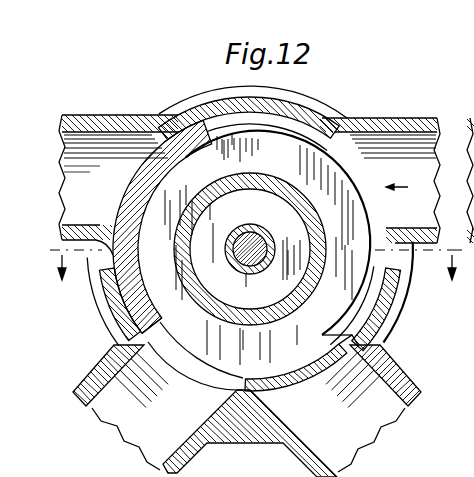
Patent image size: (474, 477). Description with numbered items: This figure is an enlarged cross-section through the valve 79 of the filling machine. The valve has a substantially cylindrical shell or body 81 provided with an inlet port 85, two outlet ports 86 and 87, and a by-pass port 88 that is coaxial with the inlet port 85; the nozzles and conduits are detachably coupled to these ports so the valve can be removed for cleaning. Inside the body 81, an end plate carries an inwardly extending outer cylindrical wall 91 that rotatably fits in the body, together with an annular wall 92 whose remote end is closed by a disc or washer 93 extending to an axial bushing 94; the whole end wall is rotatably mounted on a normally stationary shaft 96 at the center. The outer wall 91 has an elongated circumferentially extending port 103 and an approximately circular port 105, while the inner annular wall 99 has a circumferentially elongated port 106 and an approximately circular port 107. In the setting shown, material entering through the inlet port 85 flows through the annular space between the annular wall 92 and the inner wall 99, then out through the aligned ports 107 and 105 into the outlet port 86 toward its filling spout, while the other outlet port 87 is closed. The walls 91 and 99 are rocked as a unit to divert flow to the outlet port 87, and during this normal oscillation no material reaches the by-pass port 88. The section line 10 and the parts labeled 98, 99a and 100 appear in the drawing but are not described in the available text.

The section line 10 is at (257, 277).
The valve 79 is at (326, 98).
The cylindrical shell or body 81 is at (208, 106).
The inlet port 85 is at (423, 122).
The outlet port 86 is at (108, 378).
The outlet port 87 is at (407, 388).
The by-pass port 88 is at (111, 128).
The outer cylindrical wall 91 is at (209, 136).
The annular wall 92 is at (289, 160).
The disc or washer 93 is at (288, 205).
The axial bushing 94 is at (248, 233).
The stationary shaft 96 is at (264, 249).
The housing wall segment 98 is at (351, 287).
The inner annular wall 99 is at (259, 368).
The sleeve end edge 99a is at (143, 280).
The pipe bore thread 100 is at (128, 189).
The circumferentially extending port 103 is at (371, 212).
The circular port 105 is at (210, 373).
The circumferentially elongated port 106 is at (358, 296).
The circular port 107 is at (200, 361).